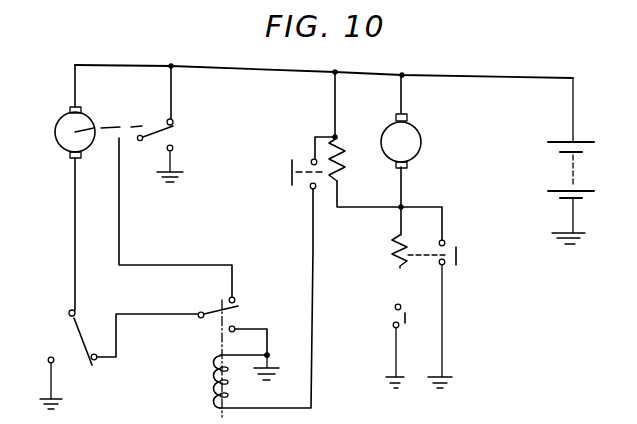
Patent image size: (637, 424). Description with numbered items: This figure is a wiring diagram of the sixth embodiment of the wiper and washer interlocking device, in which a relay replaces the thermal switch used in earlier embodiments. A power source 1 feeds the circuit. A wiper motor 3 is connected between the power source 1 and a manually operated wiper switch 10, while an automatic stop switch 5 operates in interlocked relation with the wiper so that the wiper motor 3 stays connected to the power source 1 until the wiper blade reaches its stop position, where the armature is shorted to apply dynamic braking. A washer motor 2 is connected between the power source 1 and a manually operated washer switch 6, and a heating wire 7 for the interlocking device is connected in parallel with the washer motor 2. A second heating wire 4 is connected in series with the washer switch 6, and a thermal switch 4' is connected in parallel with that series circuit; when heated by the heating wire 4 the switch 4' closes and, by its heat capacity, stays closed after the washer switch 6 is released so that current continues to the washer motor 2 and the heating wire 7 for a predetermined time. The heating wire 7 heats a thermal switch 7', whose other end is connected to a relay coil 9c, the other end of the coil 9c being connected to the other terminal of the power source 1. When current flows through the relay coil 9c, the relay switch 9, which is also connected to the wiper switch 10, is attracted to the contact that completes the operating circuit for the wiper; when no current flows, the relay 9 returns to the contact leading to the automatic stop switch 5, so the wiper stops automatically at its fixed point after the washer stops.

The power source 1 is at (573, 176).
The washer motor 2 is at (417, 138).
The wiper motor 3 is at (57, 139).
The heating wire 4 is at (404, 251).
The thermal switch 4' is at (458, 301).
The automatic stop switch 5 is at (165, 129).
The washer switch 6 is at (406, 319).
The heating wire 7 is at (345, 151).
The thermal switch 7' is at (296, 161).
The relay switch 9 is at (225, 302).
The relay coil 9c is at (214, 376).
The wiper switch 10 is at (78, 335).